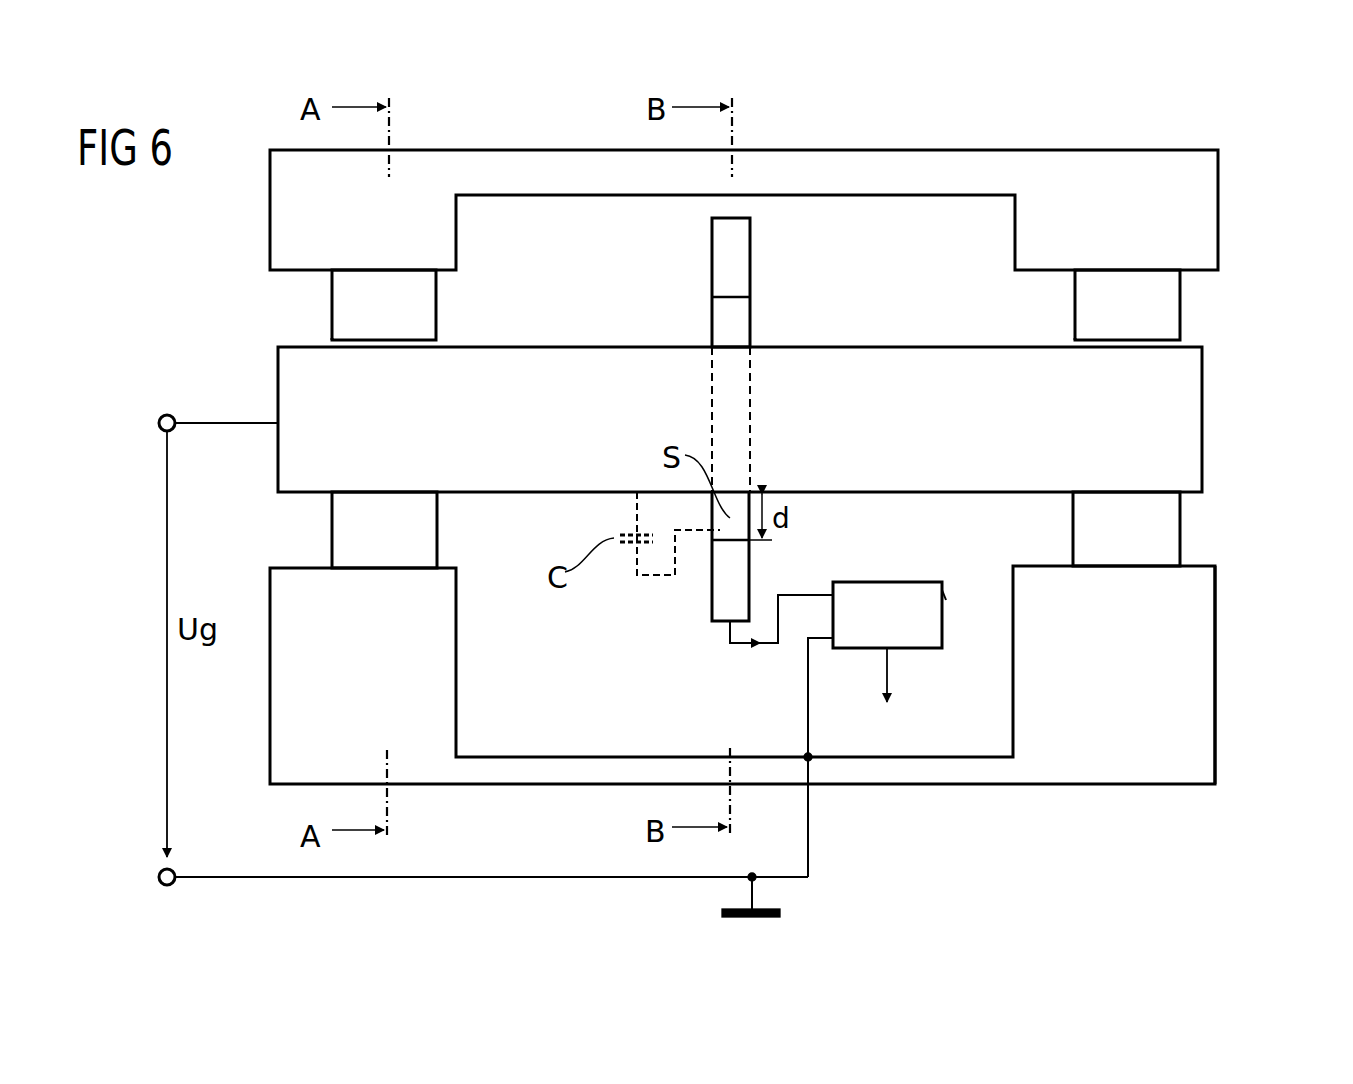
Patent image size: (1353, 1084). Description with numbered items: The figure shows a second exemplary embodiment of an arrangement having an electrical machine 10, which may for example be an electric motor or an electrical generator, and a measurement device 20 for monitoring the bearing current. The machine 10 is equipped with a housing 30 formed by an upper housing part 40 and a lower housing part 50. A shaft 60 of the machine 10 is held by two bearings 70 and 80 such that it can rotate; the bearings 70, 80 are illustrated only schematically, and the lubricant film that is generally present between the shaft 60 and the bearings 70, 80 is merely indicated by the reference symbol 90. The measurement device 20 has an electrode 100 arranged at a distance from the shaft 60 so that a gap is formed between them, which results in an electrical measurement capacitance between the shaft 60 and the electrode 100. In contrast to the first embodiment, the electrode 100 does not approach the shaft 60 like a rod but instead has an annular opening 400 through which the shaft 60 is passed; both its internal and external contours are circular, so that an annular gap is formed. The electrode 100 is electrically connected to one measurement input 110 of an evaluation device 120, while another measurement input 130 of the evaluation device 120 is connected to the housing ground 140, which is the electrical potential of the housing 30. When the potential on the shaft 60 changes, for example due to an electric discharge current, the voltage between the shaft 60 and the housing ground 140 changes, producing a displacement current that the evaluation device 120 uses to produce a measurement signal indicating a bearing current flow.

The electrical machine 10 is at (268, 700).
The measurement device 20 is at (866, 572).
The housing 30 is at (1215, 712).
The upper housing part 40 is at (1218, 207).
The lower housing part 50 is at (1215, 612).
The shaft 60 is at (935, 345).
The bearing 70 is at (436, 307).
The bearing 80 is at (1180, 304).
The lubricant film 90 is at (332, 340).
The electrode 100 is at (712, 326).
The measurement input 110 is at (828, 593).
The evaluation device 120 is at (942, 595).
The measurement input 130 is at (826, 637).
The housing ground 140 is at (752, 900).
The annular opening 400 is at (735, 322).